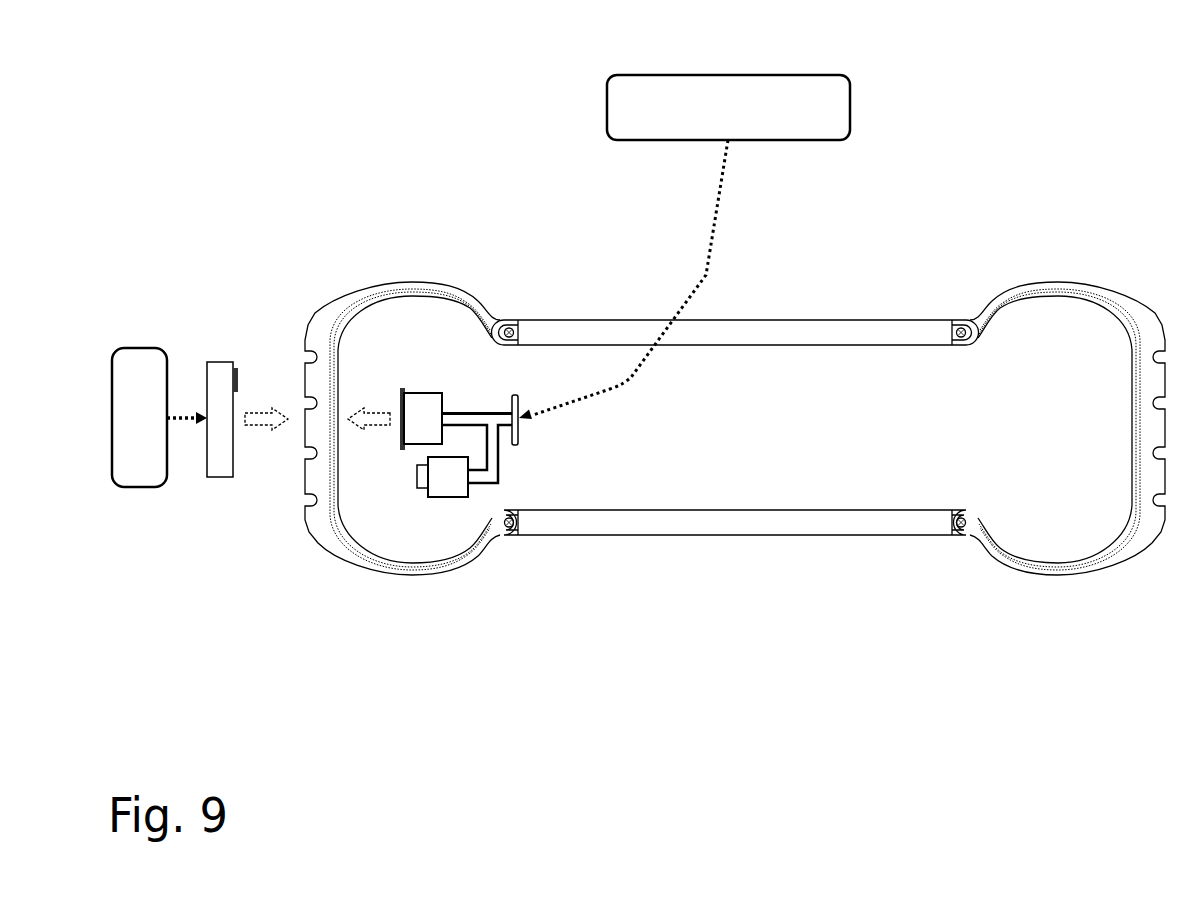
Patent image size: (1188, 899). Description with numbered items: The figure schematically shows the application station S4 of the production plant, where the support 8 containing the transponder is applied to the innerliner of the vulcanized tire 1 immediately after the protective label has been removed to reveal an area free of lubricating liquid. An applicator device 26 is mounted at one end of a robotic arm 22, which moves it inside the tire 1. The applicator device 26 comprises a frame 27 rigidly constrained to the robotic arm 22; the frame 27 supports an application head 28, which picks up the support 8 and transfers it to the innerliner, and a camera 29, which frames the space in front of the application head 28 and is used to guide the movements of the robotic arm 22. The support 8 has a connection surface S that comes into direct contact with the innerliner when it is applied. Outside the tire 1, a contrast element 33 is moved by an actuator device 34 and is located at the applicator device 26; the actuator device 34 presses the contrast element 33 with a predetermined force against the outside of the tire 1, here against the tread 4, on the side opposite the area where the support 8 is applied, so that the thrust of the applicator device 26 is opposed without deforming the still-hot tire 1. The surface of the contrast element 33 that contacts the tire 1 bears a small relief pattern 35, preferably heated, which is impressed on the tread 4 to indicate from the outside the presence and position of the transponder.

The tire 1 is at (702, 484).
The tread 4 is at (313, 477).
The support 8 is at (402, 388).
The robotic arm 22 is at (778, 198).
The applicator device 26 is at (407, 520).
The frame 27 is at (476, 411).
The application head 28 is at (424, 410).
The camera 29 is at (449, 497).
The contrast element 33 is at (222, 362).
The actuator device 34 is at (175, 336).
The relief pattern 35 is at (240, 377).
The connection surface S is at (390, 444).
The application station S4 is at (190, 69).